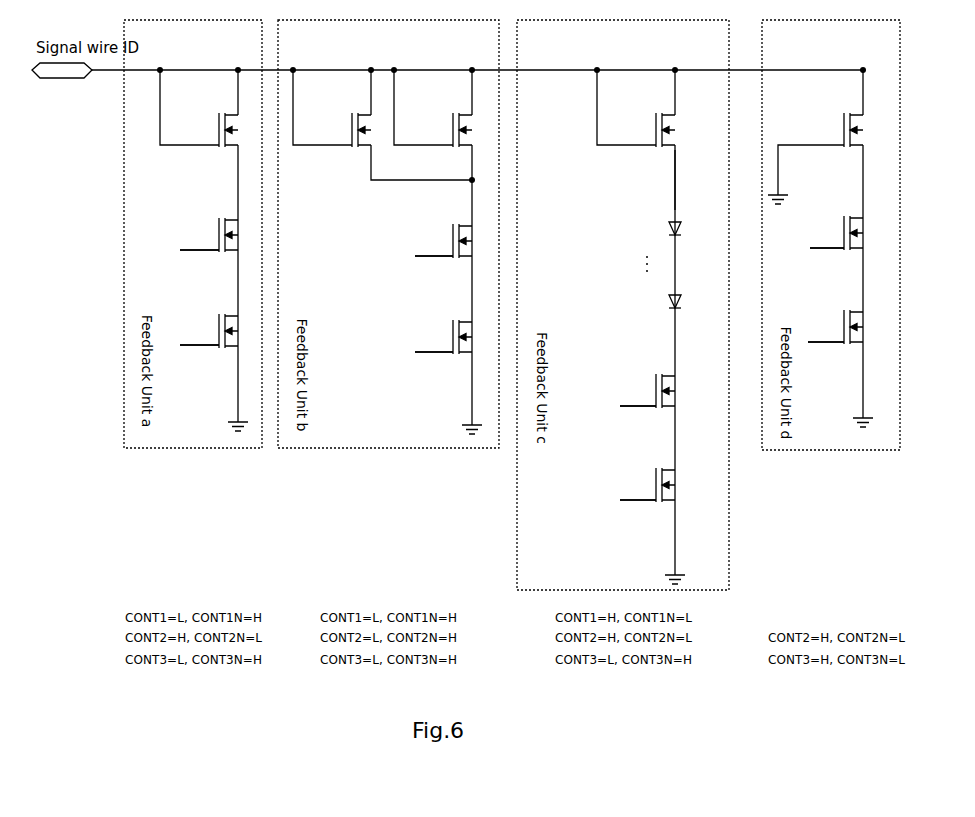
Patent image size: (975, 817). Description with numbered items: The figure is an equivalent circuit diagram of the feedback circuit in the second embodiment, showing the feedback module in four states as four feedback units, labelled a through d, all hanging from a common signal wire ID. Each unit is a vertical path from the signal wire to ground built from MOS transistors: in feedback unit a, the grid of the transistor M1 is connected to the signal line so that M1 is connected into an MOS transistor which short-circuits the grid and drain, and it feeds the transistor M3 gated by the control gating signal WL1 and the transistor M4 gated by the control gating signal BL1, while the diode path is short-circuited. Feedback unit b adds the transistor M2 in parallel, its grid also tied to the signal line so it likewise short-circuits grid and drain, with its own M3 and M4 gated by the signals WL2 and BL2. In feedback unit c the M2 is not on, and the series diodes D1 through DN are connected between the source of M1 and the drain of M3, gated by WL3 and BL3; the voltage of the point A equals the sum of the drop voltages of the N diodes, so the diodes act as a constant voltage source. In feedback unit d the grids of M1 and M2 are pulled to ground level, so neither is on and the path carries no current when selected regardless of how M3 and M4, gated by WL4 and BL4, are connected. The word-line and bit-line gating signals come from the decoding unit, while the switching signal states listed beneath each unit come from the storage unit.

The transistor M1 is at (535, 143).
The transistor M2 is at (349, 143).
The transistor M3 is at (535, 326).
The transistor M4 is at (535, 417).
The control gating signal WL1 is at (199, 243).
The control gating signal WL2 is at (434, 248).
The control gating signal WL3 is at (638, 399).
The control gating signal WL4 is at (827, 240).
The control gating signal BL1 is at (199, 338).
The control gating signal BL2 is at (434, 344).
The control gating signal BL3 is at (638, 492).
The control gating signal BL4 is at (826, 334).
The diode D1 is at (662, 231).
The diode DN is at (662, 304).
The point A is at (689, 180).